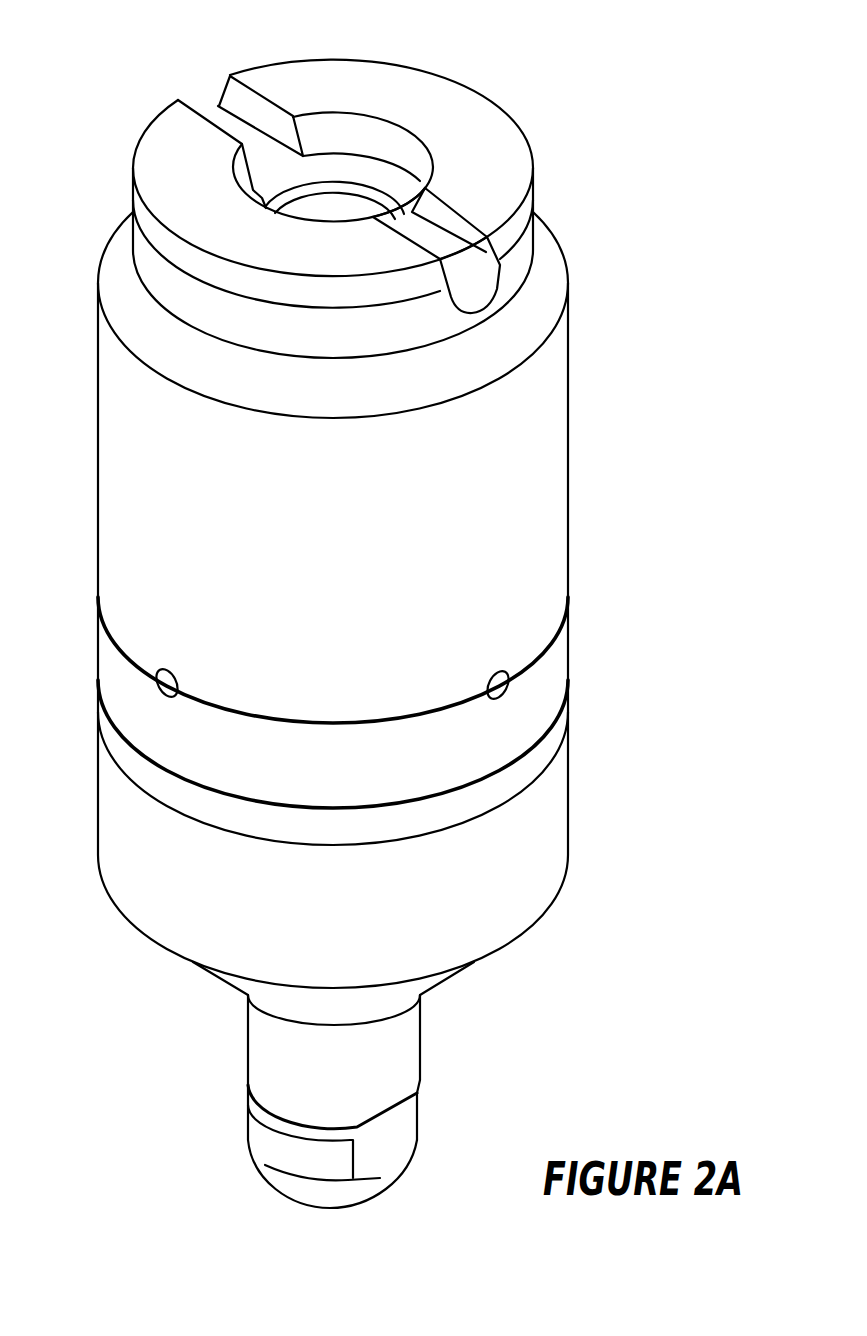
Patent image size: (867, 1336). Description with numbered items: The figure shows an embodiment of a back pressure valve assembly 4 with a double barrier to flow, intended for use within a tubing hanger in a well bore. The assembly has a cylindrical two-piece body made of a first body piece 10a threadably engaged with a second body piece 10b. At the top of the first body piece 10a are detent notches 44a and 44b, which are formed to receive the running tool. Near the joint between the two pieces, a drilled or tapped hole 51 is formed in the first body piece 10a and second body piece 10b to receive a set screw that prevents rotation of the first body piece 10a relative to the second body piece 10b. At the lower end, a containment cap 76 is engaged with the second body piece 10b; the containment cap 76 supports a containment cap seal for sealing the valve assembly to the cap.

The back pressure valve assembly 4 is at (591, 78).
The detent notch 44a is at (228, 121).
The detent notch 44b is at (470, 286).
The first body piece 10a is at (540, 485).
The second body piece 10b is at (542, 832).
The drilled or tapped hole 51 is at (158, 692).
The containment cap 76 is at (265, 1135).